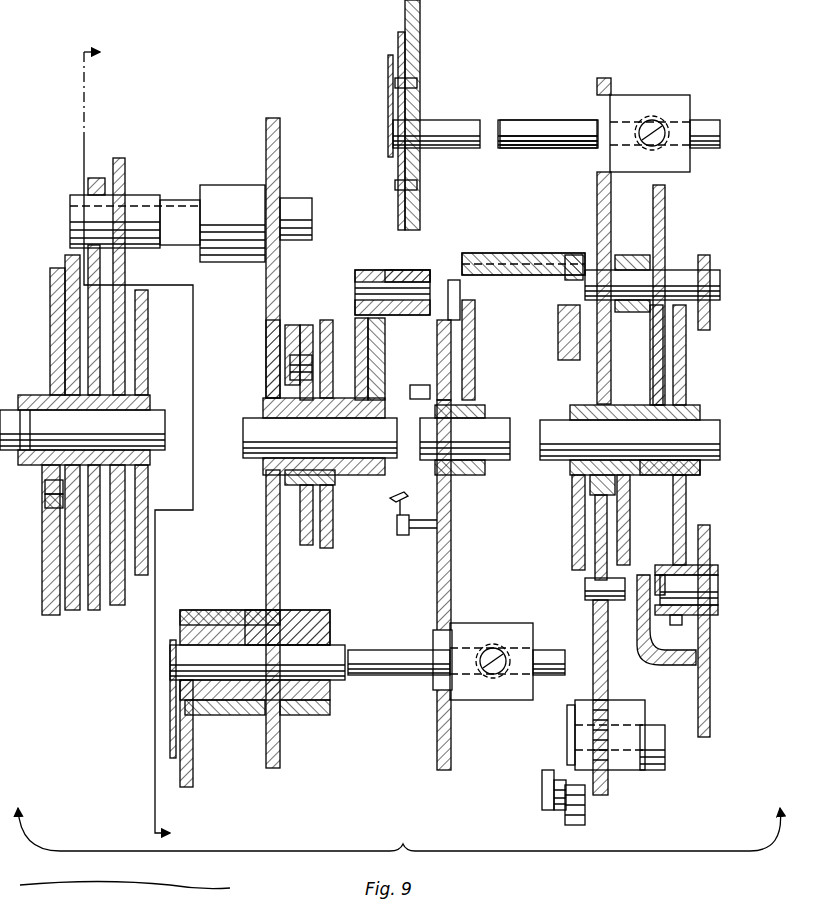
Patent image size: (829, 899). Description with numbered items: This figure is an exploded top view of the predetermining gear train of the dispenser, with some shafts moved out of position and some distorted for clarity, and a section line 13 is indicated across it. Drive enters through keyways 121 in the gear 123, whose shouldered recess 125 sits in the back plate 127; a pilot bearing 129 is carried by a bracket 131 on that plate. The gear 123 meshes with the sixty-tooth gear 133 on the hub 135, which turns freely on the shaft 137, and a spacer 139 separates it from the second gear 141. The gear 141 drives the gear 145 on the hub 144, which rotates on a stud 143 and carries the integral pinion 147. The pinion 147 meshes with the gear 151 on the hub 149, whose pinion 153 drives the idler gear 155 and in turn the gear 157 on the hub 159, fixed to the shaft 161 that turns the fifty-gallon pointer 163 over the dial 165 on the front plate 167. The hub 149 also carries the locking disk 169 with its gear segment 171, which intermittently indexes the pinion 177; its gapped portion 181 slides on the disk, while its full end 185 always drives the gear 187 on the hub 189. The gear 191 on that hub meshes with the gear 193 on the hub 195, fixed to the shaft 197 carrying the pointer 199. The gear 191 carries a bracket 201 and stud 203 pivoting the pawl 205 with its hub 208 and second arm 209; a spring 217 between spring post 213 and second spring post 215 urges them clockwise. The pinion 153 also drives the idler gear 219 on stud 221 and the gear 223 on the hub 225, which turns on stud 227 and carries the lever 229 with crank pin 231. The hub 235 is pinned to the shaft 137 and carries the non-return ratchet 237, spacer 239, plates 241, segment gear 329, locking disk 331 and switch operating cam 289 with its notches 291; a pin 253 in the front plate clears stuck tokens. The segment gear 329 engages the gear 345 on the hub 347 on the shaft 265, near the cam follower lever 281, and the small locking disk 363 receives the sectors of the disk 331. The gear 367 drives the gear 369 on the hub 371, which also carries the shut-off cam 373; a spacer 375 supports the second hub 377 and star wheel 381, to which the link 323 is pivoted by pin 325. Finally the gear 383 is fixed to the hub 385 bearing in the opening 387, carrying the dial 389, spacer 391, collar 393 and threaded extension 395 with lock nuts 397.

The section line 13- 13 is at (139, 443).
The keyways 121 is at (720, 590).
The gear 123 is at (685, 620).
The shouldered recess 125 is at (700, 570).
The back plate 127 is at (712, 320).
The pilot bearing 129 is at (660, 580).
The bracket 131 is at (670, 648).
The sixty-tooth gear 133 is at (686, 500).
The hub 135 is at (700, 468).
The shaft 137 is at (712, 425).
The spacer 139 is at (660, 396).
The second gear 141 is at (680, 385).
The stud 143 is at (722, 288).
The hub 144 is at (650, 275).
The forty-eight-tooth gear 145 is at (666, 200).
The twelve-tooth pinion 147 is at (640, 258).
The hub 149 is at (572, 411).
The sixty-tooth gear 151 is at (630, 511).
The twenty-four-tooth pinion 153 is at (595, 482).
The idler gear 155 is at (606, 240).
The twenty-four-tooth gear 157 is at (612, 85).
The hub 159 is at (672, 100).
The shaft 161 is at (705, 120).
The fifty-gallon pointer 163 is at (390, 90).
The fifty-gallon dial 165 is at (400, 38).
The front plate 167 is at (423, 13).
The locking disk 169 is at (580, 551).
The gear segment 171 is at (560, 345).
The pinion 177 is at (512, 252).
The portion of the pinion 181 is at (575, 262).
The end of the pinion 185 is at (468, 258).
The sixty-tooth gear 187 is at (475, 370).
The hub 189 is at (490, 405).
The forty-tooth gear 191 is at (450, 300).
The forty-tooth gear 193 is at (438, 585).
The hub 195 is at (470, 630).
The shaft 197 is at (362, 672).
The pointer 199 is at (170, 732).
The bracket 201 is at (443, 318).
The stud 203 is at (358, 290).
The pawl 205 is at (368, 356).
The hub 208 is at (385, 272).
The second arm 209 is at (370, 380).
The spring post 213 is at (416, 385).
The second spring post 215 is at (397, 530).
The spring 217 is at (392, 503).
The idler gear 219 is at (600, 521).
The stud 221 is at (585, 582).
The twenty-four tooth gear 223 is at (605, 691).
The hub 225 is at (640, 712).
The stud 227 is at (665, 760).
The lever 229 is at (585, 822).
The crank pin 231 is at (545, 780).
The hub 235 is at (45, 395).
The non-return ratchet 237 is at (70, 608).
The spacer 239 is at (47, 485).
The plates 241 is at (57, 533).
The pin 253 is at (47, 502).
The shaft 265 is at (312, 210).
The cam follower lever 281 is at (220, 895).
The switch operating cam 289 is at (141, 575).
The notches 291 is at (103, 876).
The link 323 is at (292, 328).
The pin 325 is at (298, 360).
The segment gear 329 is at (92, 608).
The locking disk 331 is at (117, 605).
The gear 345 is at (88, 186).
The hub 347 is at (80, 210).
The small locking disk 363 is at (126, 176).
The thirty-six tooth gear 367 is at (281, 146).
The forty-tooth gear 369 is at (268, 342).
The hub 371 is at (385, 463).
The shut-off cam 373 is at (333, 546).
The spacer 375 is at (313, 482).
The second hub 377 is at (280, 490).
The star wheel 381 is at (313, 548).
The forty-tooth gear 383 is at (280, 598).
The hub 385 is at (240, 625).
The opening 387 is at (240, 597).
The 500-gallon dial 389 is at (182, 760).
The spacer 391 is at (190, 706).
The collar 393 is at (255, 705).
The threaded extension 395 is at (320, 642).
The lock nuts 397 is at (300, 712).